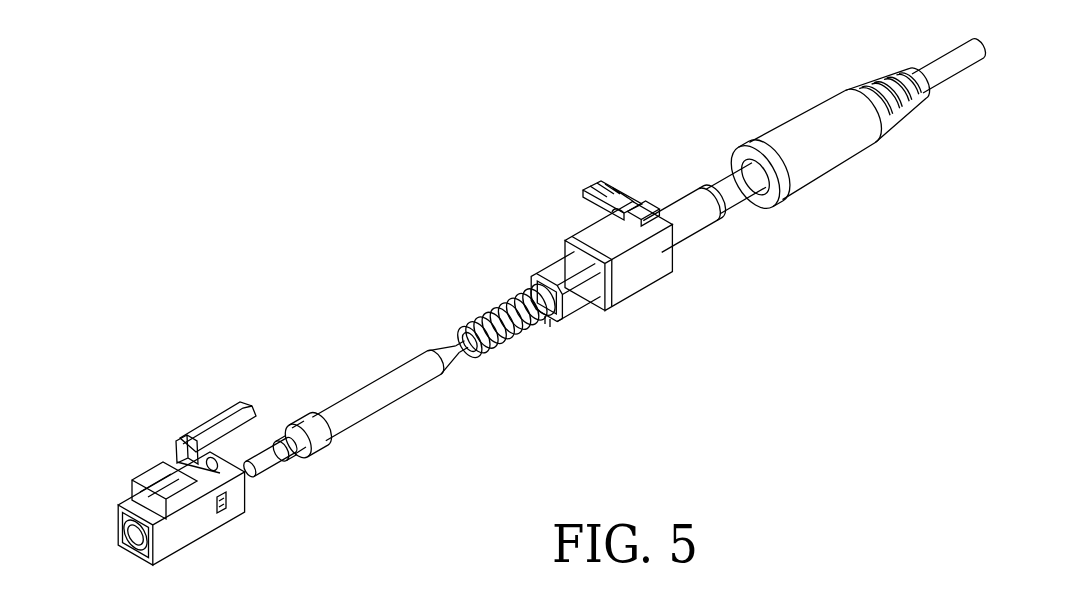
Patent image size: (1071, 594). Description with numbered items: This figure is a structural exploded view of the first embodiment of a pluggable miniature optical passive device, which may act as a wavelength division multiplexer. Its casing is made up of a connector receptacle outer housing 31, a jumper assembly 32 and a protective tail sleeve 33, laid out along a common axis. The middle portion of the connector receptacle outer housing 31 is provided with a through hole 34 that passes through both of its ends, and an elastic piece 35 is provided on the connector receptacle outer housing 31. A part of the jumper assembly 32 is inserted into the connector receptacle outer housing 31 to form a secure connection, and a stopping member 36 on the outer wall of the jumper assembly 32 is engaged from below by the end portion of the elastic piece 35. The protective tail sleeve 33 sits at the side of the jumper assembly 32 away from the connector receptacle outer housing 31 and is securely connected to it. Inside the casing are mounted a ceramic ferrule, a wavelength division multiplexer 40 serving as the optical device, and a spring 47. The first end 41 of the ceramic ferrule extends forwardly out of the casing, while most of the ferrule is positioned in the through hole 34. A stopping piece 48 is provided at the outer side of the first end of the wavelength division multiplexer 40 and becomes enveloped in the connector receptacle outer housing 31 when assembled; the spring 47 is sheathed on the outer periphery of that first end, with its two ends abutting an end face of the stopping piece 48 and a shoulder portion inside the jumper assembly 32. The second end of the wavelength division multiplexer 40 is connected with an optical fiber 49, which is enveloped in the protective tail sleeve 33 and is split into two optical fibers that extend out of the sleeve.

The connector receptacle outer housing 31 is at (190, 520).
The jumper assembly 32 is at (636, 268).
The protective tail sleeve 33 is at (807, 133).
The through hole 34 is at (124, 546).
The elastic piece 35 is at (226, 421).
The stopping member 36 is at (602, 196).
The wavelength division multiplexer 40 is at (373, 443).
The first end 41 is at (280, 458).
The spring 47 is at (522, 336).
The stopping piece 48 is at (306, 418).
The optical fiber 49 is at (463, 333).